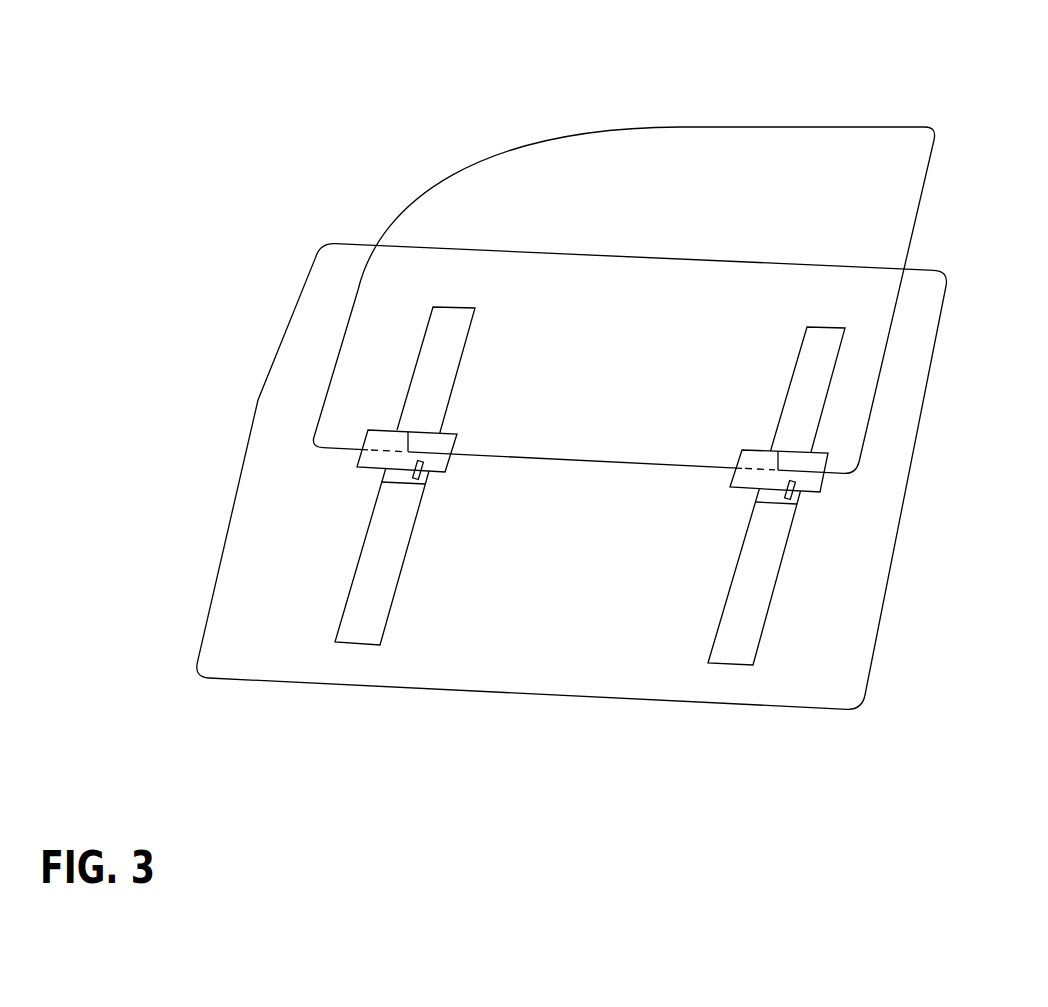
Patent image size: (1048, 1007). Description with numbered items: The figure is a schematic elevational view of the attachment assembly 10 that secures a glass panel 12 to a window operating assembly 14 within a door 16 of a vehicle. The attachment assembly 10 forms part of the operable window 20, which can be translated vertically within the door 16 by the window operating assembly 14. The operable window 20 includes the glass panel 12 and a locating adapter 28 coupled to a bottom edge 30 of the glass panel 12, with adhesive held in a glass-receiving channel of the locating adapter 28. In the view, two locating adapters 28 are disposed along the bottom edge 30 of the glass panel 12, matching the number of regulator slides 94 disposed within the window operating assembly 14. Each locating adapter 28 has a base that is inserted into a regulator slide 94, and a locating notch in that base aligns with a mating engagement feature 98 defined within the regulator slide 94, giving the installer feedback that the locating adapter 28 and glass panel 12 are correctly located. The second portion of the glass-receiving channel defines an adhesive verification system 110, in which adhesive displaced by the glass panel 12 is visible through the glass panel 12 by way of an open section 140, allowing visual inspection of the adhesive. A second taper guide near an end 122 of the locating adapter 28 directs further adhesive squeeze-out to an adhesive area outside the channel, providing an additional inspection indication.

The attachment assembly 10 is at (848, 488).
The glass panel 12 is at (870, 198).
The window operating assembly 14 is at (829, 527).
The door 16 is at (328, 221).
The operable window 20 is at (781, 111).
The locating adapter 28 is at (344, 461).
The bottom edge 30 is at (492, 463).
The regulator slide 94 is at (397, 477).
The mating engagement feature 98 is at (410, 483).
The adhesive verification system 110 is at (427, 431).
The end 122 is at (740, 472).
The open section 140 is at (796, 462).